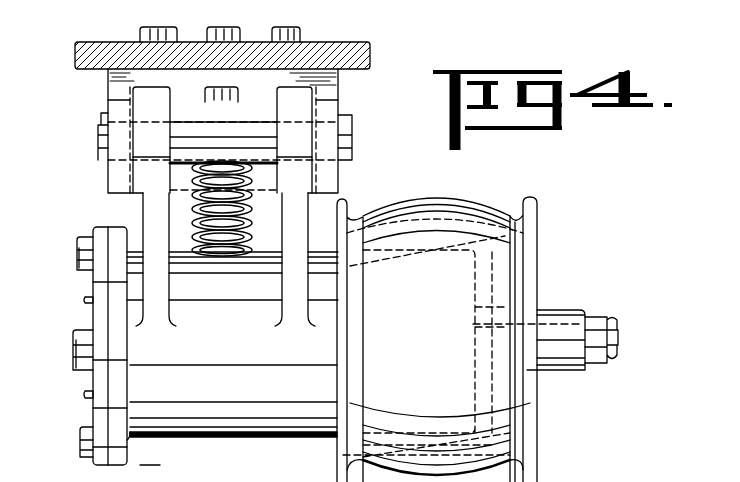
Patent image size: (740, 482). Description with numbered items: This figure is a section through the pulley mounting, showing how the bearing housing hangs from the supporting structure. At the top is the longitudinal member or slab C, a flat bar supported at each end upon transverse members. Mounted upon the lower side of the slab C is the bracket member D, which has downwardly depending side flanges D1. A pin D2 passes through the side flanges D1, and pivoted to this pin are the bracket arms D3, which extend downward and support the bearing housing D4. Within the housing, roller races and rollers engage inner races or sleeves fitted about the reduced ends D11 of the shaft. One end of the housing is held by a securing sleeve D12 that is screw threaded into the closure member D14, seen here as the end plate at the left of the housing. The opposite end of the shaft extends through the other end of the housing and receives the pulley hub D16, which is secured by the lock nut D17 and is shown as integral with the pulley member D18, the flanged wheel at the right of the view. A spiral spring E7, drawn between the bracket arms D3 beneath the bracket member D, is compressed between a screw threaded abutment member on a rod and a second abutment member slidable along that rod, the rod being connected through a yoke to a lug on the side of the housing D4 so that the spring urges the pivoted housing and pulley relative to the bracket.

The longitudinal member or slab C is at (88, 58).
The bracket member D is at (187, 77).
The side flanges D1 is at (118, 110).
The pin D2 is at (240, 137).
The bracket arms D3 is at (160, 225).
The bearing housing D4 is at (232, 346).
The reduced ends of the shaft D11 is at (565, 375).
The securing sleeve D12 is at (127, 481).
The closure member D14 is at (103, 418).
The pulley hub D16 is at (560, 312).
The lock nut D17 is at (600, 325).
The pulley member D18 is at (523, 250).
The spiral spring E7 is at (197, 220).